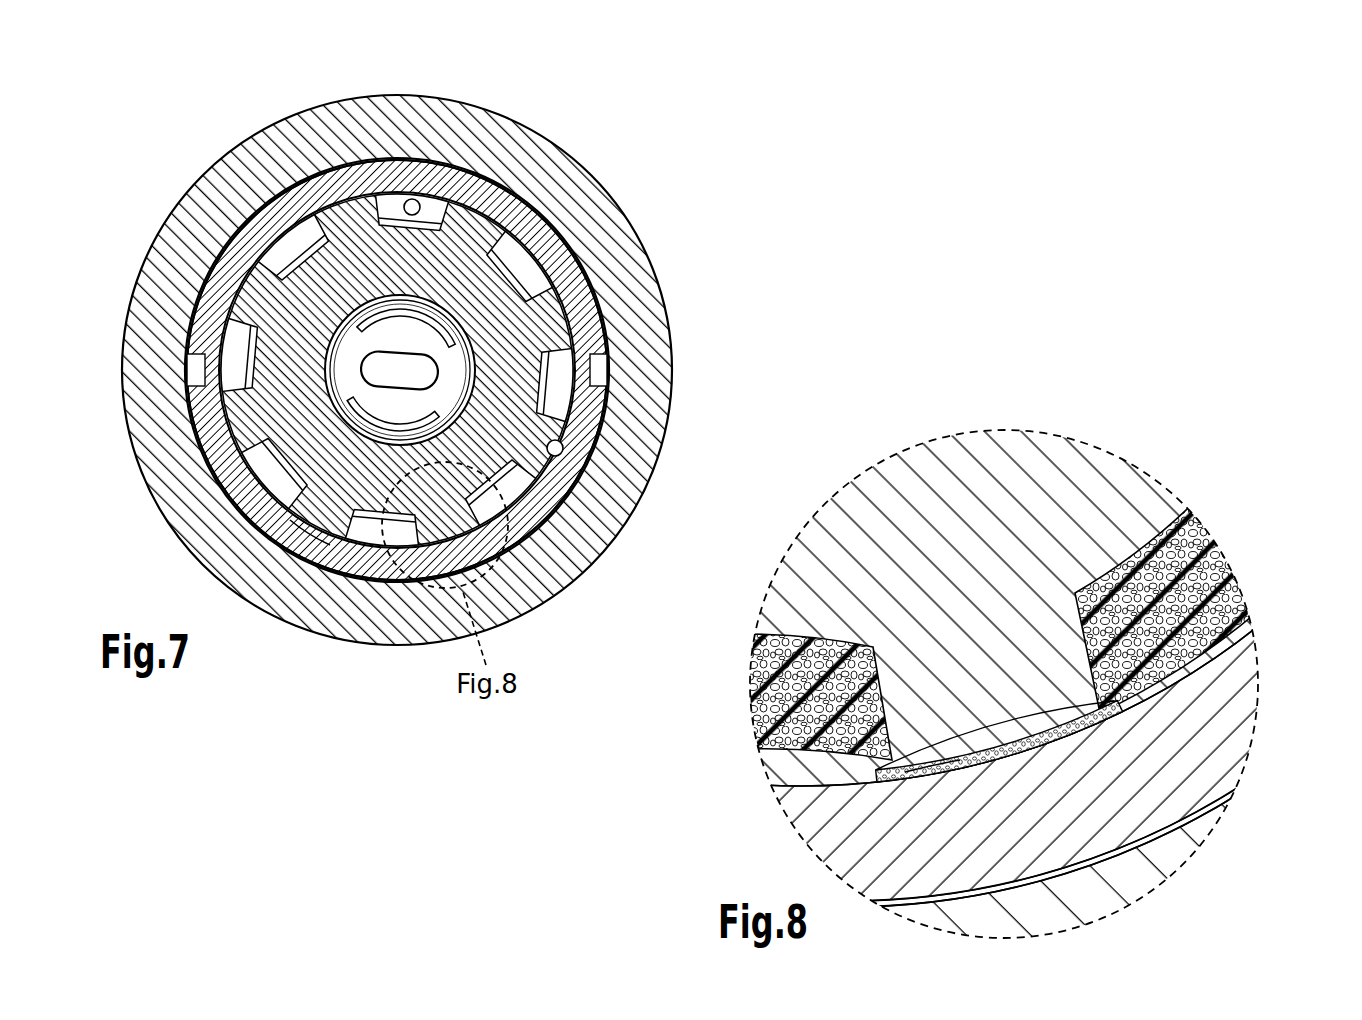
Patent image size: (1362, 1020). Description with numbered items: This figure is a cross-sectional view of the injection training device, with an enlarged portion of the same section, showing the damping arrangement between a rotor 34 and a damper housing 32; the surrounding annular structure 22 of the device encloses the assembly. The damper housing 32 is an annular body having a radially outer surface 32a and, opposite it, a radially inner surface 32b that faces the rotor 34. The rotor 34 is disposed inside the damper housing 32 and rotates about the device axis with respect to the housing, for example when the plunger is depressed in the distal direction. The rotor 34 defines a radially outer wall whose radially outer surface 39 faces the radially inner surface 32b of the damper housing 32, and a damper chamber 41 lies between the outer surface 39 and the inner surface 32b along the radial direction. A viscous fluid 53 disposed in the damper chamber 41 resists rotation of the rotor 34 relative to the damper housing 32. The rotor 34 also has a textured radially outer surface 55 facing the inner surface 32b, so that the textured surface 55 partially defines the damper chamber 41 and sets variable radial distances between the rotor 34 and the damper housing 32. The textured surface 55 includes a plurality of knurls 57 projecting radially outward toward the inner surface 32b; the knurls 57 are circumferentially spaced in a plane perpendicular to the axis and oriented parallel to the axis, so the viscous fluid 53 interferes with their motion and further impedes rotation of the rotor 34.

In FIG. 7, the housing 22 is at (600, 186).
In FIG. 8, the housing 22 is at (1147, 893).
In FIG. 7, the damper housing 32 is at (588, 278).
In FIG. 8, the damper housing 32 is at (1258, 716).
In FIG. 7, the radially outer surface 32a is at (487, 177).
In FIG. 8, the radially outer surface 32a is at (1018, 878).
In FIG. 7, the radially inner surface 32b is at (413, 200).
In FIG. 8, the radially inner surface 32b is at (1050, 735).
In FIG. 7, the rotor 34 is at (546, 376).
In FIG. 8, the rotor 34 is at (993, 477).
In FIG. 7, the radially outer surface 39 is at (543, 393).
In FIG. 8, the radially outer surface 39 is at (933, 767).
In FIG. 8, the damper chamber 41 is at (1108, 720).
In FIG. 8, the viscous fluid 53 is at (1212, 548).
In FIG. 7, the textured radially outer surface 55 is at (308, 532).
In FIG. 7, the knurls 57 is at (400, 530).
In FIG. 8, the knurls 57 is at (770, 757).